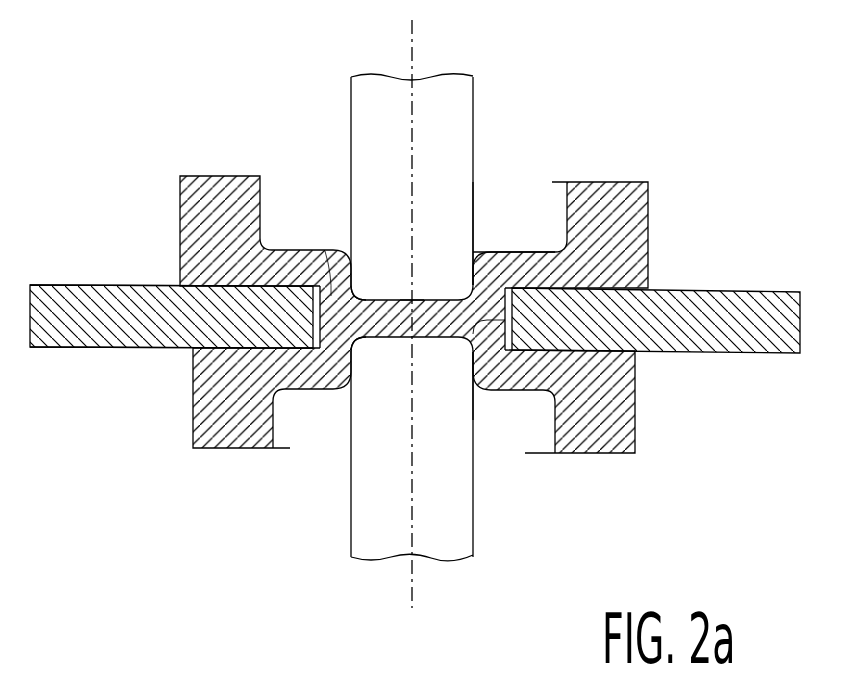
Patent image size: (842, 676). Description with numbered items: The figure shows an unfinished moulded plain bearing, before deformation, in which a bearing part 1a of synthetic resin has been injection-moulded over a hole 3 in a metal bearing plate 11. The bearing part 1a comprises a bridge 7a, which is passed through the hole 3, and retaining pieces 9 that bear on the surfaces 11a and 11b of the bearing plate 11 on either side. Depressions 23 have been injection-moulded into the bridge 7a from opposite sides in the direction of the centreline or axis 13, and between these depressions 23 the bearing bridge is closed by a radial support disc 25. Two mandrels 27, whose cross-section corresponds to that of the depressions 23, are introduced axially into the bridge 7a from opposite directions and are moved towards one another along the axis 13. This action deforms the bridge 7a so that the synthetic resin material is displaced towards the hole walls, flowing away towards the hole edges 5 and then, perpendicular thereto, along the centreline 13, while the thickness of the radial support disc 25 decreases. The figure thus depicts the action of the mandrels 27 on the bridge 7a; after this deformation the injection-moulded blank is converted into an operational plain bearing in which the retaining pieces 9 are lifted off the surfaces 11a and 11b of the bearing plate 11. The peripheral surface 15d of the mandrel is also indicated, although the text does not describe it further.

The bearing part 1a is at (666, 160).
The hole 3 is at (507, 388).
The hole edges 5 is at (330, 245).
The bridge 7a is at (497, 279).
The retaining pieces 9 is at (183, 232).
The bearing plate 11 is at (713, 303).
The surface of the bearing plate 11a is at (62, 283).
The surface of the bearing plate 11b is at (68, 350).
The centreline or axis 13 is at (414, 62).
The shaft peripheral surface 15d is at (470, 270).
The depressions 23 is at (382, 295).
The radial support disc 25 is at (428, 303).
The mandrels 27 is at (463, 128).